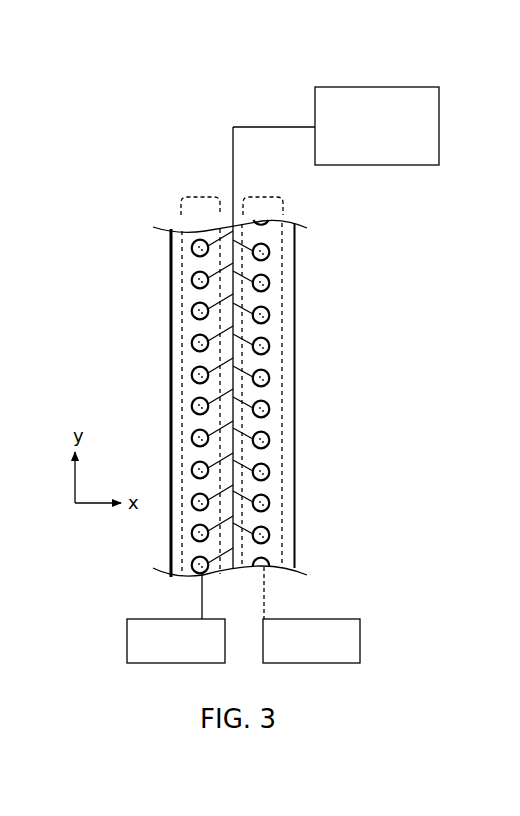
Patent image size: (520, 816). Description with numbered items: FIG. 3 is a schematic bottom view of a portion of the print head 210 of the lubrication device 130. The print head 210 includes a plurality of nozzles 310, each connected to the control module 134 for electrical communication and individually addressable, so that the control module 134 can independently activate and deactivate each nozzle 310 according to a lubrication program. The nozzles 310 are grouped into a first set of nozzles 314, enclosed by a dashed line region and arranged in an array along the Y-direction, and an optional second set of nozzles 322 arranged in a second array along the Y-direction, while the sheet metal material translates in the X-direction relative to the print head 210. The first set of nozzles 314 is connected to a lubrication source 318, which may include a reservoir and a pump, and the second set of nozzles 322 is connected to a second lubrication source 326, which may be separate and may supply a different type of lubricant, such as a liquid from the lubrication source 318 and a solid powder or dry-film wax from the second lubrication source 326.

The lubrication system 130 is at (141, 172).
The control module 134 is at (439, 120).
The print head 210 is at (167, 374).
The nozzle 310 is at (191, 245).
The first set of nozzles 314 is at (201, 193).
The lubrication source 318 is at (127, 640).
The second set of nozzles 322 is at (262, 193).
The second lubrication source 326 is at (360, 640).